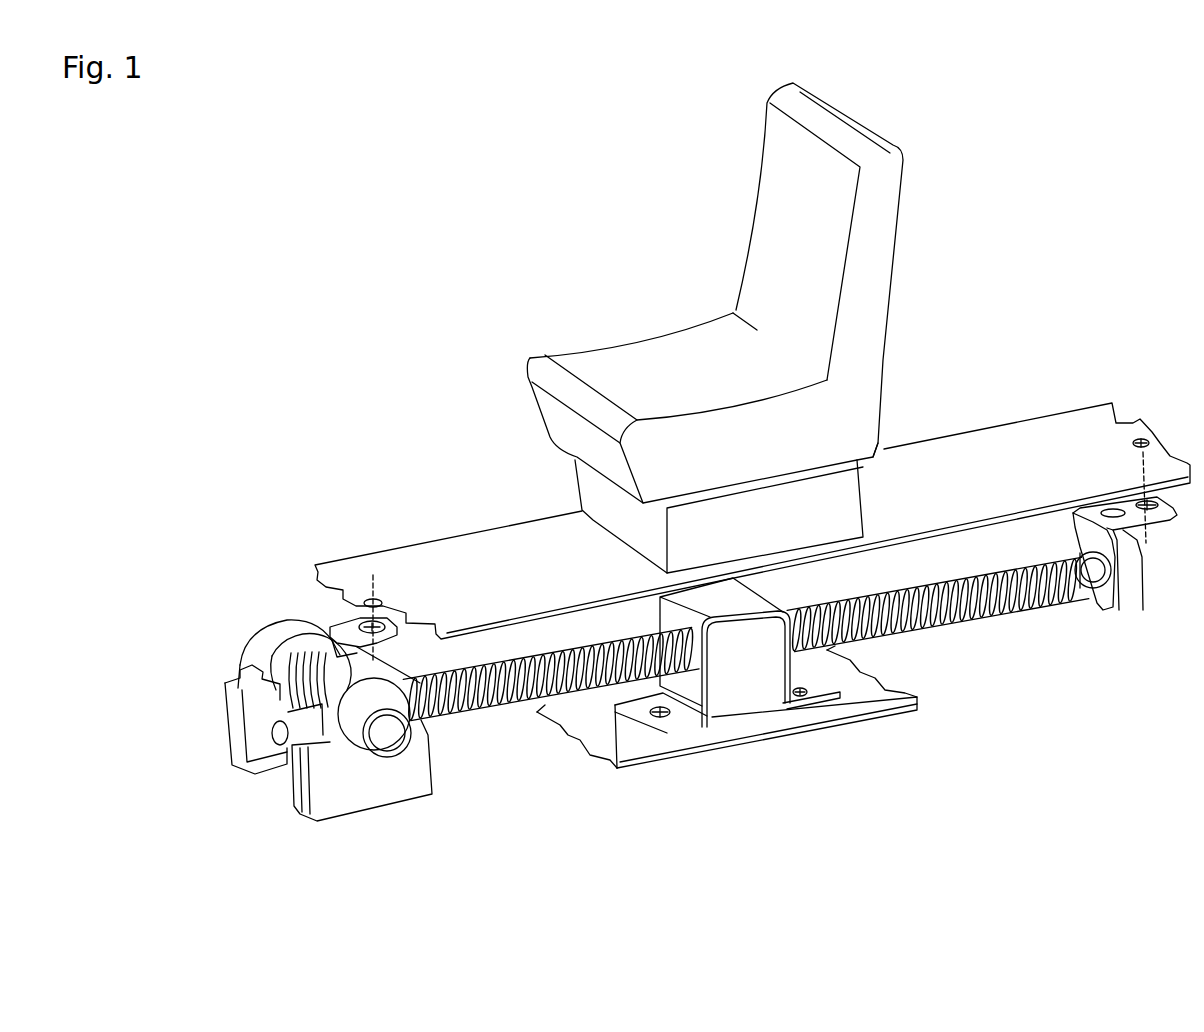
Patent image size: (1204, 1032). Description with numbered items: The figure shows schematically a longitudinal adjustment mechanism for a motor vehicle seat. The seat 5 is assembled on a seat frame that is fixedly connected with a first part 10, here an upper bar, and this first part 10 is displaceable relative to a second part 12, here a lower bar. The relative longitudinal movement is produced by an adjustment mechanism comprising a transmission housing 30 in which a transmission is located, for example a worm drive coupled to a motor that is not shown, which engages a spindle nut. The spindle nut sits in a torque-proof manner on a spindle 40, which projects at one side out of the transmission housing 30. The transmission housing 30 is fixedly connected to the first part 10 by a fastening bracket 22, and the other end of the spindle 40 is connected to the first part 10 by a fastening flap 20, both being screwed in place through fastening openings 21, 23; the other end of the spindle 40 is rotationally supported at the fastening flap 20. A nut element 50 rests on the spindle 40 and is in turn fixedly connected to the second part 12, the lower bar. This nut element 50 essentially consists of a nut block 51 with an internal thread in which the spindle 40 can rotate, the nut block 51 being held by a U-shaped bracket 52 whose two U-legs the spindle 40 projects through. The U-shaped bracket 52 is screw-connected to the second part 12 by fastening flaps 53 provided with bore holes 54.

The seat 5 is at (631, 380).
The first part 10 is at (497, 552).
The second part 12 is at (570, 737).
The fastening flap 20 is at (1137, 572).
The fastening opening 21 is at (1160, 515).
The fastening bracket 22 is at (450, 703).
The fastening opening 23 is at (353, 645).
The transmission housing 30 is at (338, 813).
The spindle 40 is at (1007, 607).
The nut element 50 is at (745, 716).
The nut block 51 is at (742, 642).
The U-shaped bracket 52 is at (700, 727).
The fastening flap 53 is at (630, 720).
The bore hole 54 is at (657, 720).